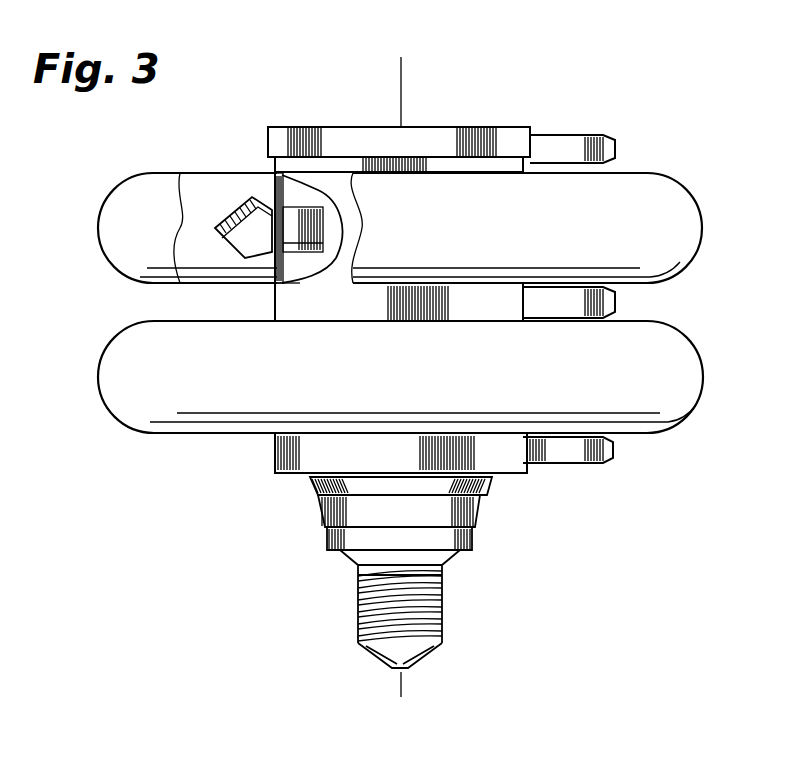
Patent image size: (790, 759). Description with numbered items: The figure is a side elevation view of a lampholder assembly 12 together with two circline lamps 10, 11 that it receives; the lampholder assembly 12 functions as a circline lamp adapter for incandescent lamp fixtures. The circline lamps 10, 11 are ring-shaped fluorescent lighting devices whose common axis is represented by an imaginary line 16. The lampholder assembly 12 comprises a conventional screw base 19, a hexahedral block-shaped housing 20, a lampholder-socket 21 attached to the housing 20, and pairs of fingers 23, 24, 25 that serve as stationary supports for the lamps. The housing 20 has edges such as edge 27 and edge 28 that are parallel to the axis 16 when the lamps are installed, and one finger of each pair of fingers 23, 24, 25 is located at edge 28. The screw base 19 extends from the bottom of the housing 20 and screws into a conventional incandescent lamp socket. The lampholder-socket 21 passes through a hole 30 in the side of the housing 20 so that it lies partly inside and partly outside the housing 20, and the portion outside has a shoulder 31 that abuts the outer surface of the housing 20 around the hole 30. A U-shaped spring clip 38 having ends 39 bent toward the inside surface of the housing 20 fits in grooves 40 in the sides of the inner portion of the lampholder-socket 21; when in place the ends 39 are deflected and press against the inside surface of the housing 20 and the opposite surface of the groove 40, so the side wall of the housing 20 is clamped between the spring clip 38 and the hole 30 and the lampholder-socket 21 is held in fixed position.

The circline lamp 10 is at (691, 190).
The circline lamp 11 is at (695, 358).
The lampholder assembly 12 is at (513, 116).
The imaginary line 16 is at (403, 115).
The screw base 19 is at (438, 606).
The housing 20 is at (288, 475).
The lampholder-socket 21 is at (243, 213).
The fingers 23 is at (616, 151).
The fingers 24 is at (616, 307).
The fingers 25 is at (590, 464).
The edge 27 is at (274, 304).
The edge 28 is at (525, 300).
The hole 30 is at (288, 213).
The shoulder 31 is at (277, 197).
The spring clip 38 is at (285, 243).
The ends 39 is at (283, 284).
The grooves 40 is at (285, 233).